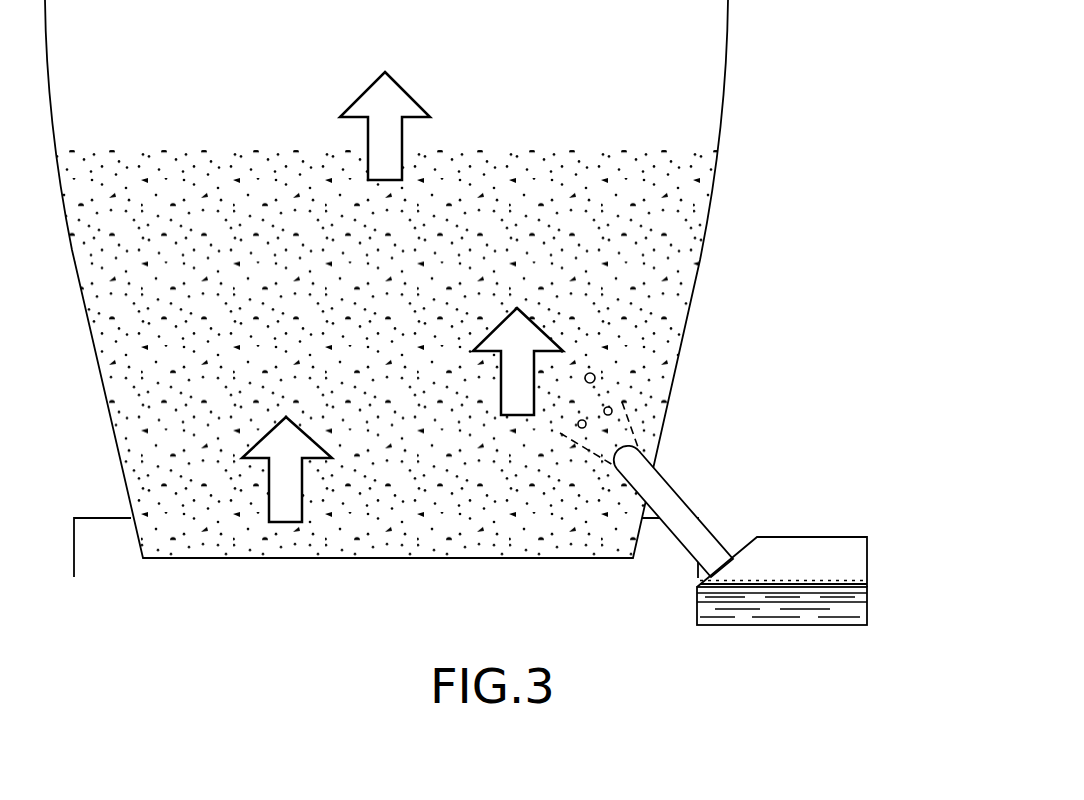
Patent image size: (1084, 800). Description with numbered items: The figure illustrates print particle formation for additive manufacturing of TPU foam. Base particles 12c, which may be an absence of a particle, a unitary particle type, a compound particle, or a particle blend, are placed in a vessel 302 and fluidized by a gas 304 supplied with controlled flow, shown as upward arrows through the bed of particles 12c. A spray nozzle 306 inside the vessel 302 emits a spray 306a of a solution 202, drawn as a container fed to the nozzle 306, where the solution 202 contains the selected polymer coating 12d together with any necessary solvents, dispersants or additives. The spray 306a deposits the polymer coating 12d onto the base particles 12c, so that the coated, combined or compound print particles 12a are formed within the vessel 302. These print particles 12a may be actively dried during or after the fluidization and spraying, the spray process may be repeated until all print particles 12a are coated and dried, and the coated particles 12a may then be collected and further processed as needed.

The vessel 302 is at (725, 107).
The gas 304 is at (363, 93).
The base particle 12c is at (598, 265).
The print material 12a is at (596, 381).
The spray 306a is at (633, 428).
The spray nozzle 306 is at (663, 481).
The solution 202 is at (795, 593).
The polymer coating 12d is at (868, 600).